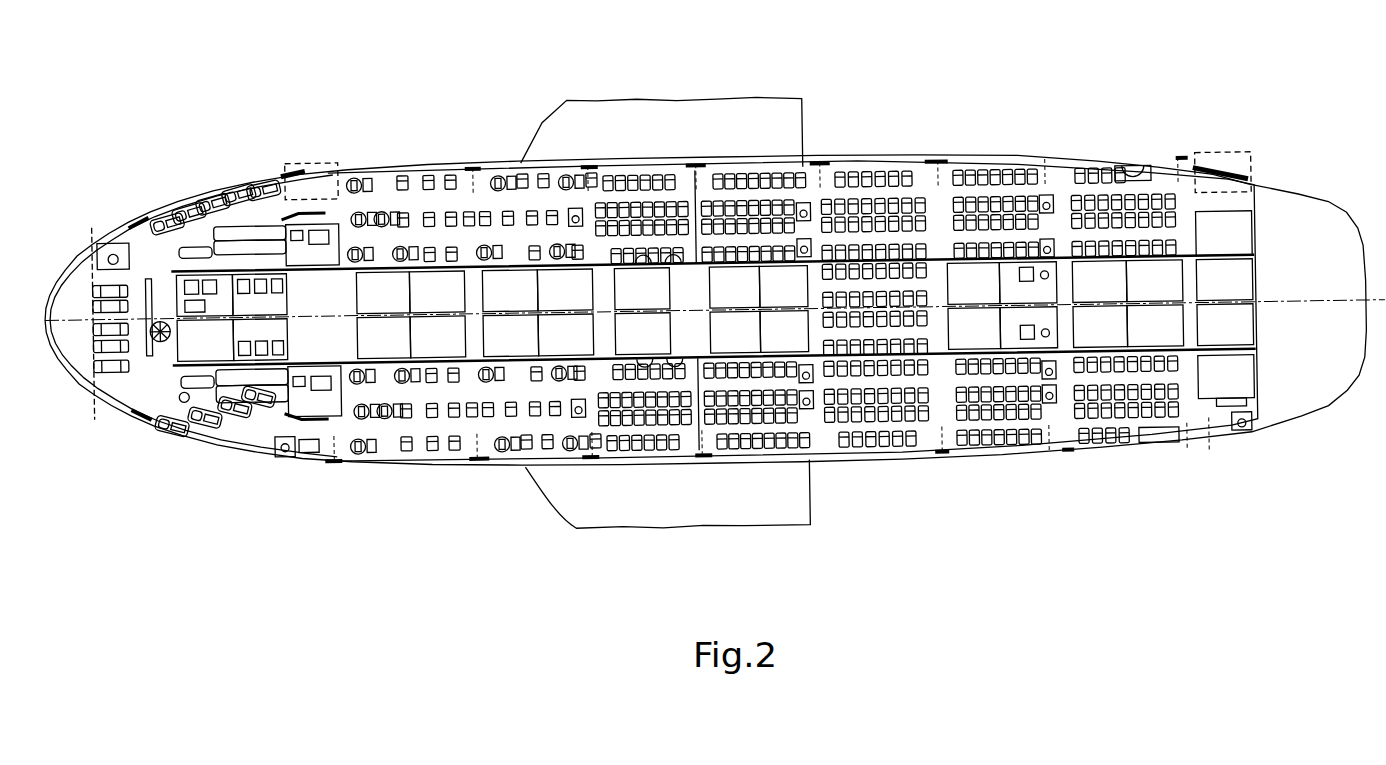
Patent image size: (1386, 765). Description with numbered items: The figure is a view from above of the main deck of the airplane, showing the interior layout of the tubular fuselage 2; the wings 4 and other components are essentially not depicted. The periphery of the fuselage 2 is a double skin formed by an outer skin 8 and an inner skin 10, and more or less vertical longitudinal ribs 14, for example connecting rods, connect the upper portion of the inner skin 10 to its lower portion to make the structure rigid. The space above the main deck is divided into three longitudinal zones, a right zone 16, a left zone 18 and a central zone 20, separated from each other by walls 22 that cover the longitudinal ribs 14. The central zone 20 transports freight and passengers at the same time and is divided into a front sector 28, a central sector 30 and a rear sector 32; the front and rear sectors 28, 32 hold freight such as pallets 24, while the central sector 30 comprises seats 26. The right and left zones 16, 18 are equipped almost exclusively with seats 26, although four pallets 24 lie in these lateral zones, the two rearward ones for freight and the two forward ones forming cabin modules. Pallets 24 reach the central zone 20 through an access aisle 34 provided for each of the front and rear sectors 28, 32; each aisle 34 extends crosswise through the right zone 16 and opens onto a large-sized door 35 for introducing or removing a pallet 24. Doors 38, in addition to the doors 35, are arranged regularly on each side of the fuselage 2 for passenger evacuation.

The fuselage 2 is at (1323, 192).
The wings 4 is at (670, 111).
The outer skin 8 is at (1107, 163).
The inner skin 10 is at (1155, 184).
The longitudinal ribs 14 is at (1197, 280).
The right zone 16 is at (983, 172).
The left zone 18 is at (945, 444).
The central zone 20 is at (197, 342).
The walls 22 is at (1040, 328).
The pallets 24 is at (333, 371).
The seats 26 is at (430, 163).
The front sector 28 is at (477, 286).
The central sector 30 is at (867, 289).
The rear sector 32 is at (1192, 330).
The access aisle 34 is at (292, 190).
The large-sized door 35 is at (310, 161).
The doors 38 is at (597, 161).